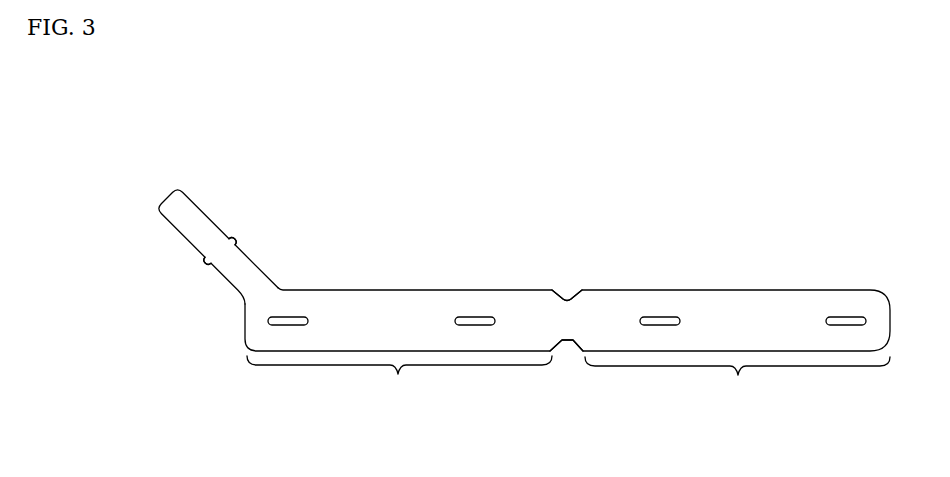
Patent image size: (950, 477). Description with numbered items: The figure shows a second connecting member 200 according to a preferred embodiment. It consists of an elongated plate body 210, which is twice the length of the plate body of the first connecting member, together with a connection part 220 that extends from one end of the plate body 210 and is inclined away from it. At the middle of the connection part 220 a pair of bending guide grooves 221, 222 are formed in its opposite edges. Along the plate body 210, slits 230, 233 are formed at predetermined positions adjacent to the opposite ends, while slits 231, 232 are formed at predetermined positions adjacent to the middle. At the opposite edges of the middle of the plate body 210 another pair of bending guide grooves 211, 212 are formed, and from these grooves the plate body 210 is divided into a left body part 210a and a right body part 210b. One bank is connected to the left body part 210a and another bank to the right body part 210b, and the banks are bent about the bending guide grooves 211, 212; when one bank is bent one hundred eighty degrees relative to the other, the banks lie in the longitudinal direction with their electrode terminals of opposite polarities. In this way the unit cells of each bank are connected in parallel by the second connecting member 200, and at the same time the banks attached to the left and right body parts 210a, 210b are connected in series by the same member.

The second connecting member 200 is at (438, 188).
The plate body 210 is at (763, 298).
The left body part 210a is at (399, 380).
The right body part 210b is at (737, 381).
The bending guide groove 211 is at (568, 298).
The bending guide groove 212 is at (560, 353).
The connection part 220 is at (166, 207).
The bending guide groove 221 is at (207, 264).
The bending guide groove 222 is at (232, 242).
The slit 230 is at (292, 315).
The slit 231 is at (473, 315).
The slit 232 is at (667, 317).
The slit 233 is at (845, 317).